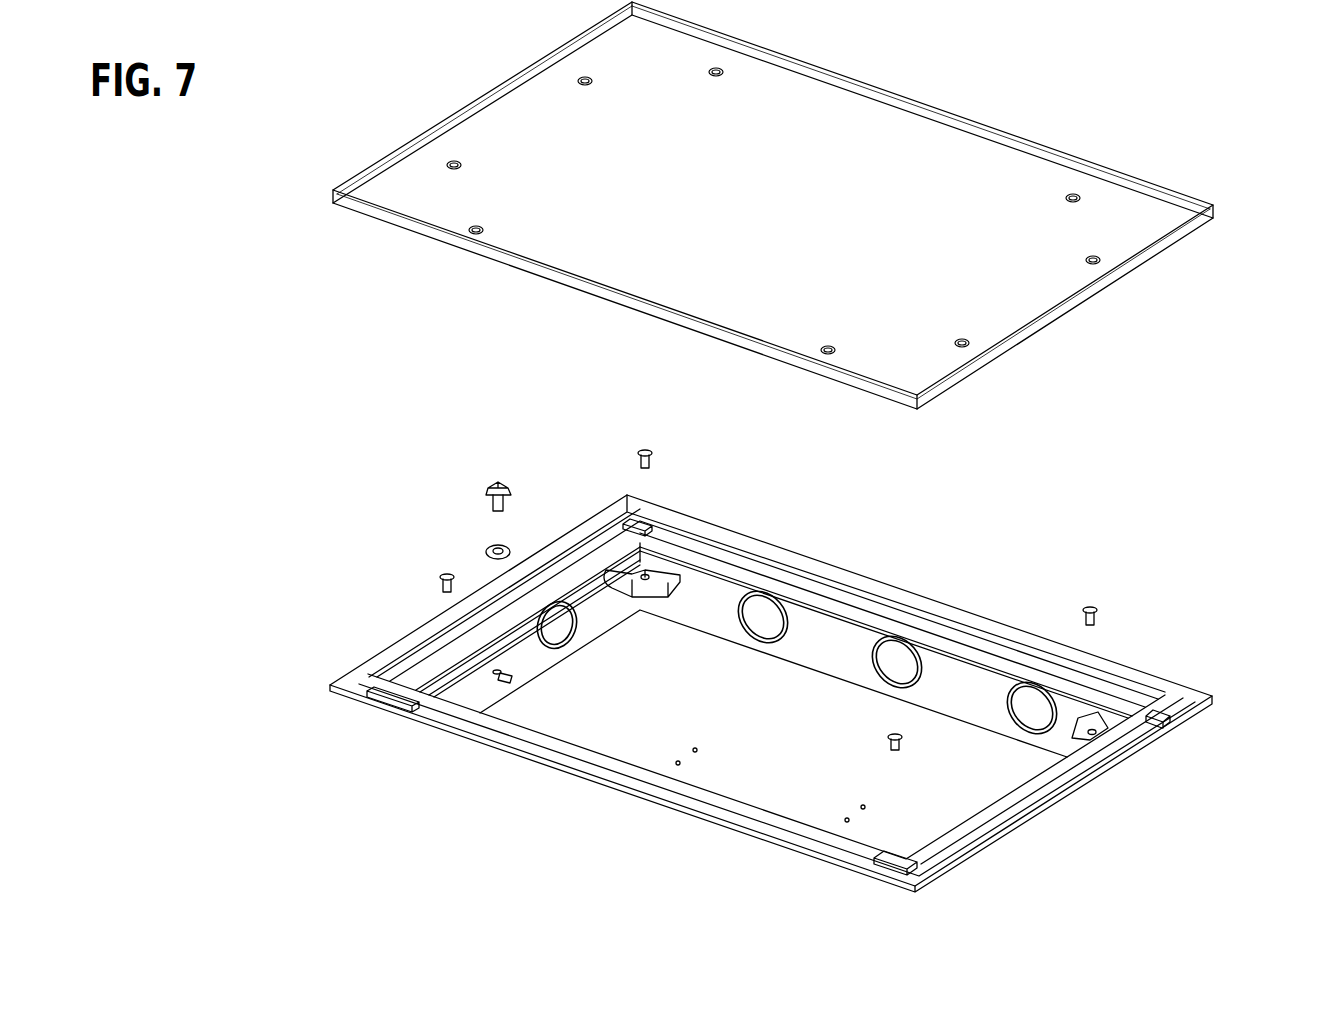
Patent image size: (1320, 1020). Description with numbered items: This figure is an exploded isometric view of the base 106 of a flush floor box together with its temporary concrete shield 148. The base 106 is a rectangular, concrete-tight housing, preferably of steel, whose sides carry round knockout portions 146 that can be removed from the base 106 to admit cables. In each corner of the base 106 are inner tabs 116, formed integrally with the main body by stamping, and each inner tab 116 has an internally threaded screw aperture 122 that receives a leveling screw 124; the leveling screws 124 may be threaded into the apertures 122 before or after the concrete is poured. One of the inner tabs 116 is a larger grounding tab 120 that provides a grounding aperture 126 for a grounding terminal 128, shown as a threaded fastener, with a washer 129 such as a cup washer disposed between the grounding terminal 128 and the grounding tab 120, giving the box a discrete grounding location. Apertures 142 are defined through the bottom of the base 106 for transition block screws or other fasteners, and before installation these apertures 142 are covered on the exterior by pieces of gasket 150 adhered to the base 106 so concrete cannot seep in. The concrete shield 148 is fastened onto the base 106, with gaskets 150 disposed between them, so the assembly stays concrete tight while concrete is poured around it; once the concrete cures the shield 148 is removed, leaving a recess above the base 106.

The base 106 is at (1210, 698).
The inner tabs 116 is at (660, 600).
The grounding tab 120 is at (492, 692).
The screw apertures 122 is at (645, 575).
The leveling screws 124 is at (646, 450).
The grounding aperture 126 is at (497, 670).
The grounding terminal 128 is at (497, 485).
The washer 129 is at (500, 548).
The apertures 142 is at (678, 762).
The knockout portions 146 is at (565, 615).
The concrete shield 148 is at (870, 115).
The gasket 150 is at (393, 688).